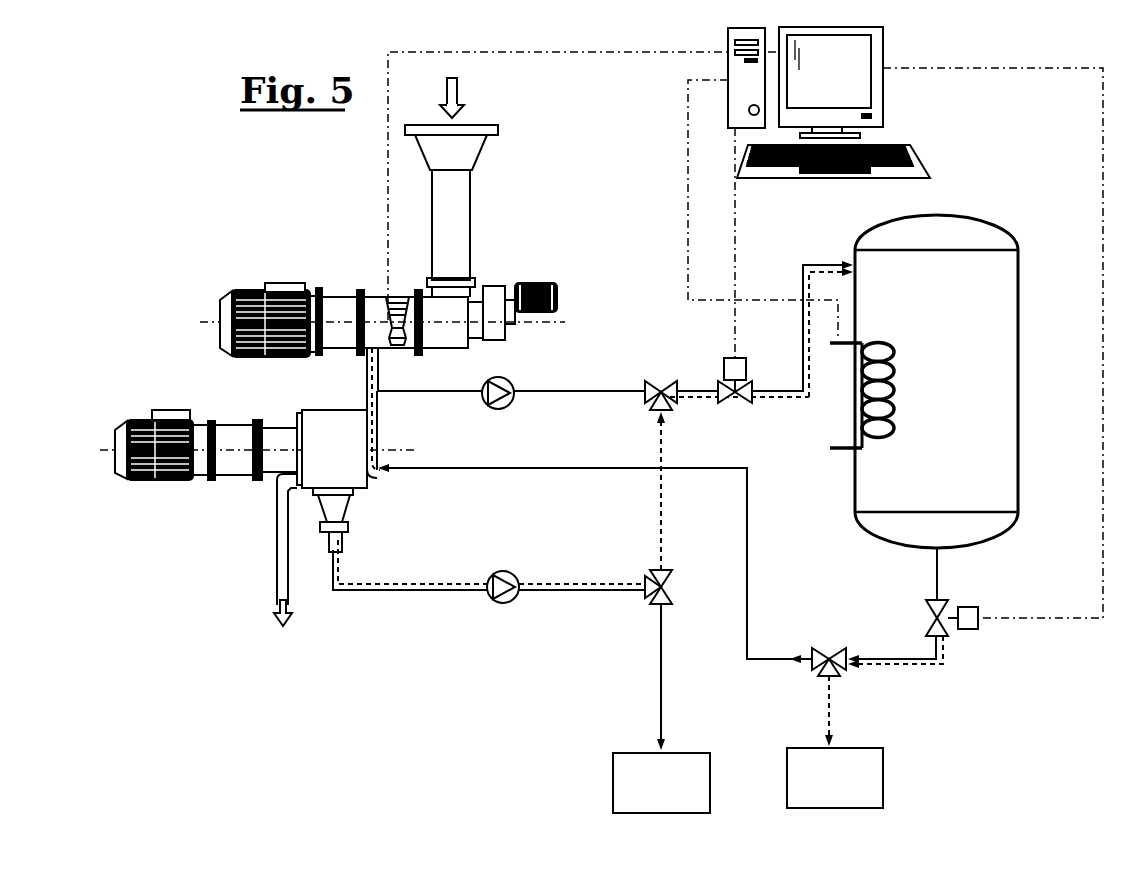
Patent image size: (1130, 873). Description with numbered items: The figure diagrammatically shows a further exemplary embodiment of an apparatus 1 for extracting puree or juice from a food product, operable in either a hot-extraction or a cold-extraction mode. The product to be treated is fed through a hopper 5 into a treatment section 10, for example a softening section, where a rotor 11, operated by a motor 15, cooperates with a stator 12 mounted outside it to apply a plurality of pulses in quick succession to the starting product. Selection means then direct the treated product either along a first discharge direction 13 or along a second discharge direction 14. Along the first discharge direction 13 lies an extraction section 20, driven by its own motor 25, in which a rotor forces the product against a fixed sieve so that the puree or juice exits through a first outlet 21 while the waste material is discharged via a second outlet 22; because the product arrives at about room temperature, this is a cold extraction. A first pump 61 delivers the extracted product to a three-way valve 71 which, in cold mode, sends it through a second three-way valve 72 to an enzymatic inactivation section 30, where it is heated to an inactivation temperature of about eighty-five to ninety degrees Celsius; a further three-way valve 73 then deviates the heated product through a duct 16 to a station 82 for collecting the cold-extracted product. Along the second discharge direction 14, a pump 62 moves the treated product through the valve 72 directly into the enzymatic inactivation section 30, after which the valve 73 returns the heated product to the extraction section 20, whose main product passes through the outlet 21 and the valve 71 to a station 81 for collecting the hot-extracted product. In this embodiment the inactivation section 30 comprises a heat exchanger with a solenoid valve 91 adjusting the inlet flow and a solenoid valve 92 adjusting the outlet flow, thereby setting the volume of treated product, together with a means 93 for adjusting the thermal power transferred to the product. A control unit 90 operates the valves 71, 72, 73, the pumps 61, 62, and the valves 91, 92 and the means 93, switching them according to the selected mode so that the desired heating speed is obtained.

The apparatus 1 is at (522, 190).
The hopper 5 is at (498, 128).
The treatment section 10 is at (436, 274).
The rotor 11 is at (390, 298).
The stator 12 is at (383, 310).
The first discharge direction 13 is at (368, 404).
The second discharge direction 14 is at (380, 392).
The motor 15 is at (212, 285).
The duct 16 is at (832, 715).
The extraction section 20 is at (290, 408).
The first outlet 21 is at (345, 505).
The second outlet 22 is at (283, 497).
The motor 25 is at (130, 497).
The enzymatic inactivation section 30 is at (990, 208).
The first pump 61 is at (515, 598).
The pump 62 is at (488, 406).
The three-way valve 71 is at (648, 572).
The second three-way valve 72 is at (660, 383).
The valve 73 is at (808, 680).
The station for collecting the hot-extracted product 81 is at (620, 780).
The station for collecting the cold-extracted product 82 is at (876, 774).
The control unit 90 is at (922, 48).
The solenoid valve 91 is at (740, 408).
The solenoid valve 92 is at (977, 642).
The means for adjusting the thermal power 93 is at (835, 462).